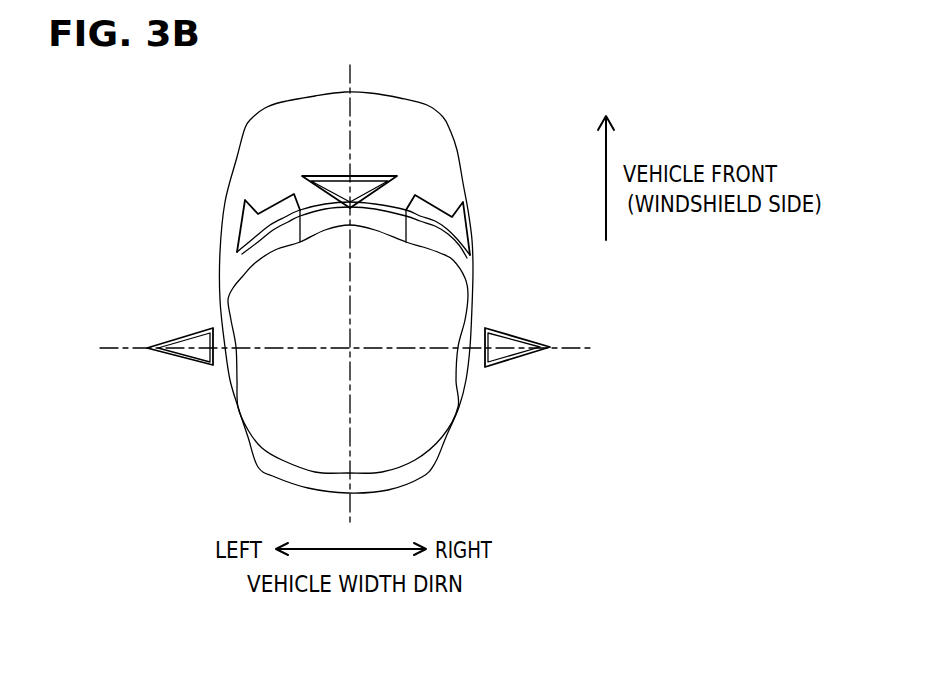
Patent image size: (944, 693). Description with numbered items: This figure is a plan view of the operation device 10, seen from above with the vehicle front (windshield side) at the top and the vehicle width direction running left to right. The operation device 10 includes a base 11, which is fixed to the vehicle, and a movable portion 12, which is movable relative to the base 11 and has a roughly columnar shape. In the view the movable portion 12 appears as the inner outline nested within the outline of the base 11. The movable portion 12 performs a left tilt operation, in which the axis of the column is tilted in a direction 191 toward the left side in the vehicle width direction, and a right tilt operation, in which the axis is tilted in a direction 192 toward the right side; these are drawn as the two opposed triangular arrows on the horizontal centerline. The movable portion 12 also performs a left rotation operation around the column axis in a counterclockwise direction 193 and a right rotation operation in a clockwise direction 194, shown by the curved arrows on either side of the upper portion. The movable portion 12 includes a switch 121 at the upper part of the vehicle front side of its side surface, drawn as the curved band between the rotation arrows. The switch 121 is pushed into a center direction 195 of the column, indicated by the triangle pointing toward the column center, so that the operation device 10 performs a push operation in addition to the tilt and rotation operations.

The operation device 10 is at (490, 103).
The base 11 is at (460, 162).
The movable portion 12 is at (441, 436).
The switch 121 is at (303, 203).
The direction of left tilt 191 is at (190, 330).
The direction of right tilt 192 is at (503, 328).
The left rotation direction 193 is at (270, 200).
The right rotation direction 194 is at (468, 225).
The center direction of the column 195 is at (362, 177).